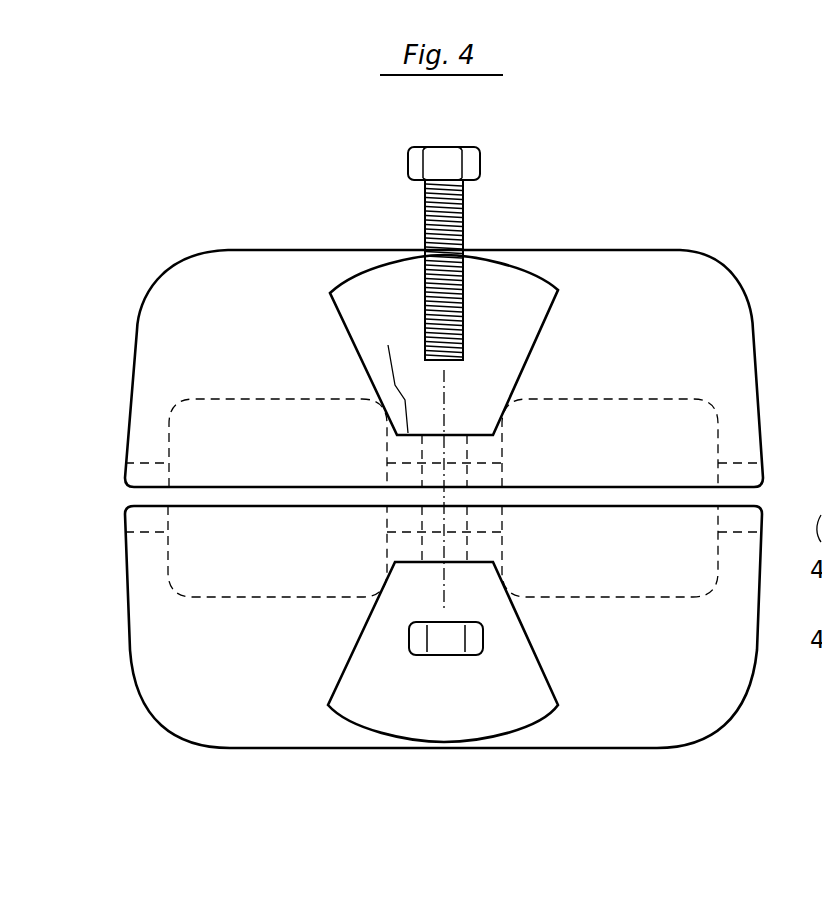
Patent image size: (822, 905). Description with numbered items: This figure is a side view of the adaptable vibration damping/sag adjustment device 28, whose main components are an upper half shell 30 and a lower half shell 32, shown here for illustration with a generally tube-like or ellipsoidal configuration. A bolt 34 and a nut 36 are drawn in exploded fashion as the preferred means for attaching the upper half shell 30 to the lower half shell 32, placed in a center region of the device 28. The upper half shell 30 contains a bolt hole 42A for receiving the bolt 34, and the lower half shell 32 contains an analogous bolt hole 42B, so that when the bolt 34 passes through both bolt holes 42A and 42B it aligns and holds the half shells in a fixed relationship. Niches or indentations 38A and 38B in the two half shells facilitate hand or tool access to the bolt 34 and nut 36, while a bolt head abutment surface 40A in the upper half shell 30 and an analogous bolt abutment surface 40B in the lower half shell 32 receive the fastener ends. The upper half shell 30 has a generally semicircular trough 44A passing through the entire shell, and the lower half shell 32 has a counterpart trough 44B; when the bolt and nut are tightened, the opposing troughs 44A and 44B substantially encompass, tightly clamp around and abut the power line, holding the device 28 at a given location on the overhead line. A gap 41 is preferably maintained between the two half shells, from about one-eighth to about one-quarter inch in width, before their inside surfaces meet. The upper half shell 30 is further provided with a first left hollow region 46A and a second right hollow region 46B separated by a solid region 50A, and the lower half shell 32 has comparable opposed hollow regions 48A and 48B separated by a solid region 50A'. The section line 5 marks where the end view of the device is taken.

The adaptable vibration damping/sag adjustment device 28 is at (613, 226).
The upper half shell 30 is at (266, 283).
The lower half shell 32 is at (265, 750).
The bolt 34 is at (460, 200).
The nut 36 is at (473, 643).
The niche or indentation of upper half shell 38A is at (526, 323).
The niche or indentation of lower half shell 38B is at (469, 707).
The bolt head abutment surface 40A is at (408, 433).
The bolt abutment surface 40B is at (400, 570).
The gap 41 is at (110, 498).
The bolt hole of upper half shell 42A is at (458, 448).
The bolt hole of lower half shell 42B is at (455, 548).
The trough of upper half shell 44A is at (148, 476).
The trough of lower half shell 44B is at (148, 531).
The first (left) hollow region of upper half shell 46A is at (270, 425).
The second (right) hollow region of upper half shell 46B is at (620, 435).
The first (left) hollow region of lower half shell 48A is at (262, 557).
The second (right) hollow region of lower half shell 48B is at (612, 557).
The solid region of upper half shell 50A is at (440, 429).
The solid region of lower half shell 50A' is at (441, 527).
The section line 5— 5 is at (800, 317).